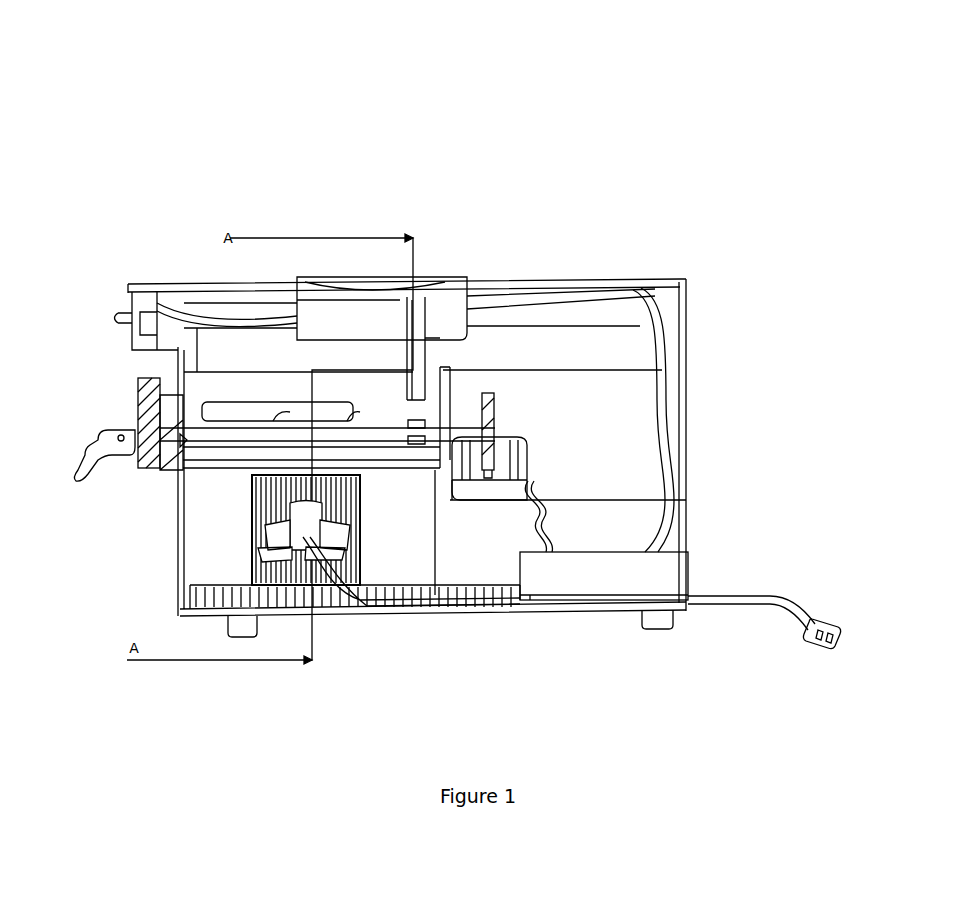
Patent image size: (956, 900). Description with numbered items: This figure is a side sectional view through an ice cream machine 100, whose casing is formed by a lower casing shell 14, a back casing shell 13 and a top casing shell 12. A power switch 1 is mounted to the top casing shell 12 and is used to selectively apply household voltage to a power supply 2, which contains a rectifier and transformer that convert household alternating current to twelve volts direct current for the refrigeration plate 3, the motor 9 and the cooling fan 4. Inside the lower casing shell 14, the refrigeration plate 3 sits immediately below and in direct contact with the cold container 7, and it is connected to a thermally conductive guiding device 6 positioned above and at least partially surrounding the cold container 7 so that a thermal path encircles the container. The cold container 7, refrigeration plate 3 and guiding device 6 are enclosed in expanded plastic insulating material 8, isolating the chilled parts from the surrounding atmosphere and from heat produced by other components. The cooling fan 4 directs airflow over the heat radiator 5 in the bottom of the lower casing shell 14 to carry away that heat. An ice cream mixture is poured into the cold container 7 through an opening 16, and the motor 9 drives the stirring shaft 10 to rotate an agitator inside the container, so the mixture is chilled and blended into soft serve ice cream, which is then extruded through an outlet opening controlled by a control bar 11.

The ice cream machine 100 is at (583, 161).
The power switch 1 is at (120, 315).
The power supply 2 is at (570, 582).
The refrigeration plate 3 is at (273, 463).
The cooling fan 4 is at (330, 553).
The heat radiator 5 is at (150, 742).
The thermally conductive guiding device 6 is at (255, 407).
The cold container 7 is at (262, 418).
The expanded plastic insulating material 8 is at (325, 385).
The motor 9 is at (493, 490).
The stirring shaft 10 is at (488, 412).
The control bar 11 is at (97, 442).
The top casing shell 12 is at (653, 283).
The back casing shell 13 is at (686, 335).
The lower casing shell 14 is at (193, 575).
The opening 16 is at (420, 300).